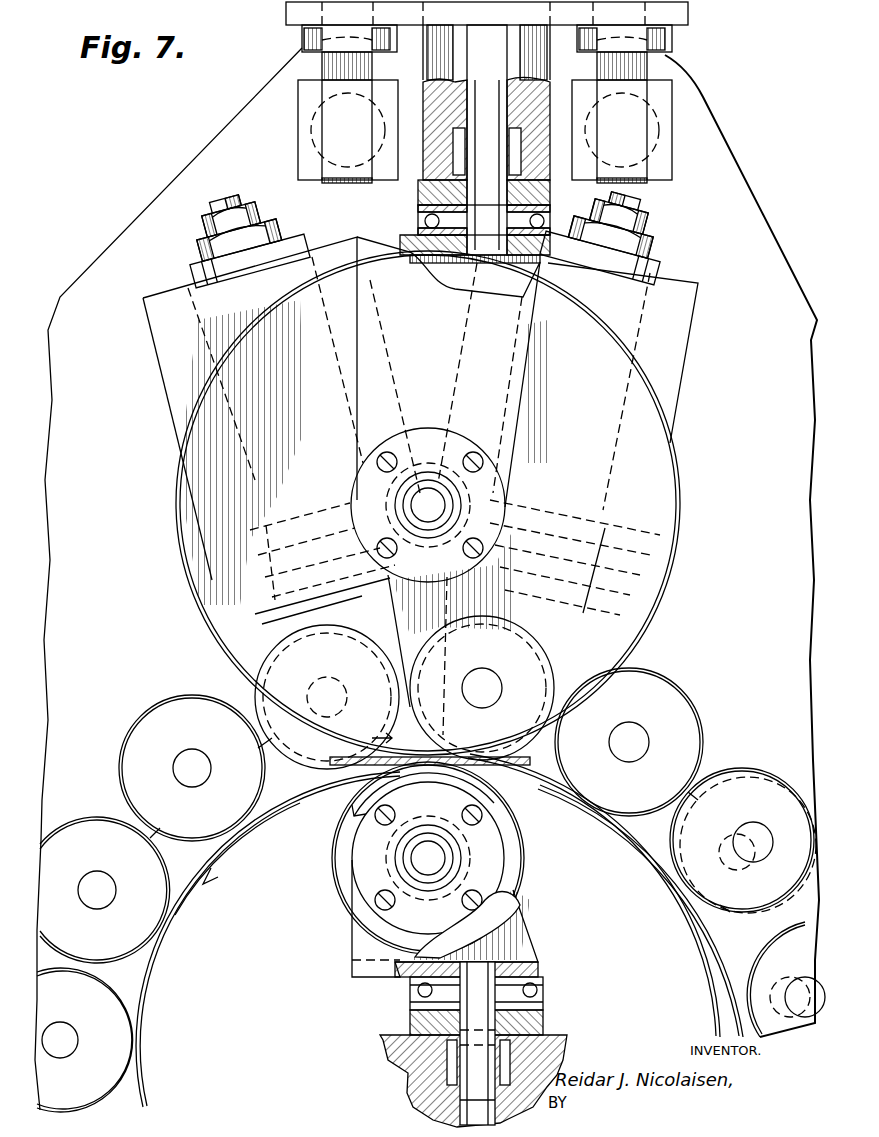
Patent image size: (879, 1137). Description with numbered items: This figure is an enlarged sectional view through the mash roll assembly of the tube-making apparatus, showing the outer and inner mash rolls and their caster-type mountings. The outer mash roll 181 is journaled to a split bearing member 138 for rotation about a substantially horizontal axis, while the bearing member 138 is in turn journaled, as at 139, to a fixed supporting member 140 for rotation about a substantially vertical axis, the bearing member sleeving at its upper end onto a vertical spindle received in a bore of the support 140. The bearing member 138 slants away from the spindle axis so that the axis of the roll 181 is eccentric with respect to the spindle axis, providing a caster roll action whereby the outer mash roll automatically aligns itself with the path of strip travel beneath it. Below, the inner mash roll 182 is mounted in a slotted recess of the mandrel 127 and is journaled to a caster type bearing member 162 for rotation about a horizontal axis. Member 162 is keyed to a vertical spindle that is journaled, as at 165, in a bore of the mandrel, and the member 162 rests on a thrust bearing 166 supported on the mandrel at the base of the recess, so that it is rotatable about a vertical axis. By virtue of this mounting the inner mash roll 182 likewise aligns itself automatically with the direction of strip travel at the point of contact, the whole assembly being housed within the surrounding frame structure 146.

The frame housing 146 is at (218, 143).
The fixed supporting member 140 is at (423, 100).
The journal 139 is at (418, 214).
The split bearing member 138 is at (370, 368).
The outer mash roll 181 is at (668, 556).
The inner mash roll 182 is at (524, 842).
The caster type bearing member 162 is at (518, 926).
The thrust bearing 166 is at (545, 992).
The mandrel 127 is at (380, 1040).
The journal 165 is at (440, 1067).